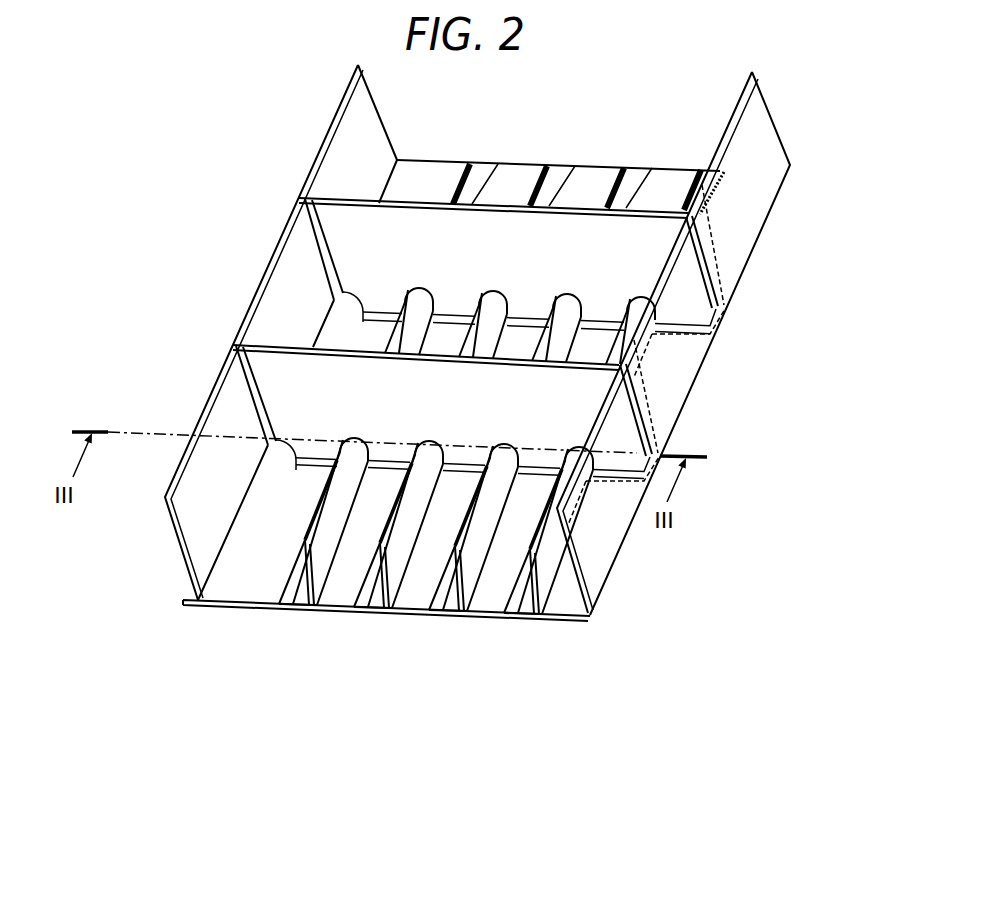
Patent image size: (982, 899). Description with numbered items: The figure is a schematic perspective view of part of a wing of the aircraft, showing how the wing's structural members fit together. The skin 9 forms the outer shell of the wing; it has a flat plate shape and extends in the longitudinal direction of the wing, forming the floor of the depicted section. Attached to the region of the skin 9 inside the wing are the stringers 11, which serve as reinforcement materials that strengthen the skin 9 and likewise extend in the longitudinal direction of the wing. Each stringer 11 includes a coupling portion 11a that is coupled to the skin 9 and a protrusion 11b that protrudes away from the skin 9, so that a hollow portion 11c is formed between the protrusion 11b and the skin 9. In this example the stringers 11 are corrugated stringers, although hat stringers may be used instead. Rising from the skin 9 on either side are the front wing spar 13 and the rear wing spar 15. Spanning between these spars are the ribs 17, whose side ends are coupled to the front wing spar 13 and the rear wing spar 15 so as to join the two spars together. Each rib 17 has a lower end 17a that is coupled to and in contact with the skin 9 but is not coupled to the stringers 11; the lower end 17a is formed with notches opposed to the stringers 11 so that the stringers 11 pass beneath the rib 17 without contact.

The skin 9 is at (236, 588).
The stringer 11 is at (377, 550).
The coupling portion 11a is at (543, 609).
The protrusion 11b is at (540, 523).
The hollow portion 11c is at (292, 590).
The front wing spar 13 is at (760, 137).
The rear wing spar 15 is at (350, 122).
The rib 17 is at (388, 220).
The lower end 17a is at (641, 297).